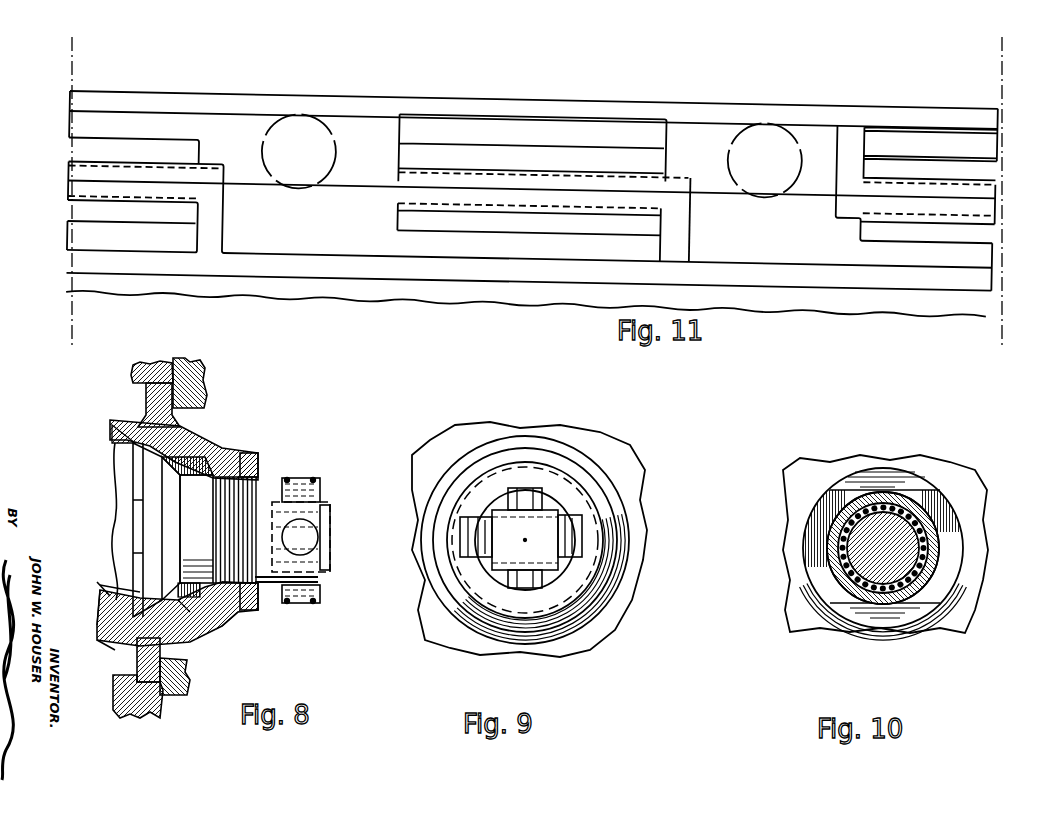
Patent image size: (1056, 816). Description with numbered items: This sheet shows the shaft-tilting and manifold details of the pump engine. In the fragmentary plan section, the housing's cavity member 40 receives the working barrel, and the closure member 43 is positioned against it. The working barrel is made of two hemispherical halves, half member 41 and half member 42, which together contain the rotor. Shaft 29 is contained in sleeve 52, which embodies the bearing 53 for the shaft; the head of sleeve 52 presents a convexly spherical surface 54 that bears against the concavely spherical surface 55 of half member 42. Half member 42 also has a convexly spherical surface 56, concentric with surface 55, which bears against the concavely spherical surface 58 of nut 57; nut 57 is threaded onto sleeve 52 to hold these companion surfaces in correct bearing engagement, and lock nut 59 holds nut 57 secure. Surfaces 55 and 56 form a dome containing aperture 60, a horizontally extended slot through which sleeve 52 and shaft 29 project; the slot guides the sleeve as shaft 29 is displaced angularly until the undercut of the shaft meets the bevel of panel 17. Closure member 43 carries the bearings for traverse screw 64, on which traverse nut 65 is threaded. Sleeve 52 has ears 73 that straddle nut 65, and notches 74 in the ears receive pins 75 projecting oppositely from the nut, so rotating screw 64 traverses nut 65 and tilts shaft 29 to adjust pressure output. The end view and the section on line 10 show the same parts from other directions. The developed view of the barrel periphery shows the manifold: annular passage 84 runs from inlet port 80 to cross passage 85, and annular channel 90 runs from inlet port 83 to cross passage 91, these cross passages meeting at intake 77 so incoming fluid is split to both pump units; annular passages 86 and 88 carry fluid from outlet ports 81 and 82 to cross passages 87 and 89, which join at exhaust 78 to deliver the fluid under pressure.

In FIG. 8, the section line 10— 10 is at (160, 423).
In FIG. 8, the panel 17 is at (122, 472).
In FIG. 10, the shaft 29 is at (903, 547).
In FIG. 8, the cavity member 40 is at (142, 703).
In FIG. 10, the cavity member 40 is at (927, 505).
In FIG. 11, the half member 41 is at (583, 62).
In FIG. 11, the half member 42 is at (401, 284).
In FIG. 8, the half member 42 is at (150, 407).
In FIG. 9, the half member 42 is at (633, 500).
In FIG. 8, the closure member 43 is at (183, 692).
In FIG. 8, the sleeve 52 is at (232, 618).
In FIG. 10, the sleeve 52 is at (867, 593).
In FIG. 10, the bearing 53 is at (900, 593).
In FIG. 8, the convexly spherical surface 54 is at (197, 626).
In FIG. 8, the concavely spherical surface 55 is at (113, 602).
In FIG. 8, the convexly spherical surface 56 is at (180, 635).
In FIG. 10, the convexly spherical surface 56 is at (833, 480).
In FIG. 8, the nut 57 is at (218, 448).
In FIG. 9, the nut 57 is at (612, 527).
In FIG. 8, the concavely spherical surface 58 is at (187, 528).
In FIG. 8, the lock nut 59 is at (250, 466).
In FIG. 9, the lock nut 59 is at (578, 580).
In FIG. 8, the aperture 60 is at (192, 620).
In FIG. 9, the aperture 60 is at (452, 590).
In FIG. 8, the traverse screw 64 is at (320, 597).
In FIG. 9, the traverse screw 64 is at (521, 518).
In FIG. 8, the traverse nut 65 is at (322, 556).
In FIG. 9, the traverse nut 65 is at (517, 525).
In FIG. 8, the ears 73 is at (320, 487).
In FIG. 9, the ears 73 is at (504, 577).
In FIG. 8, the notches 74 is at (322, 525).
In FIG. 8, the pins 75 is at (318, 537).
In FIG. 9, the pins 75 is at (532, 577).
In FIG. 11, the intake 77 is at (798, 116).
In FIG. 11, the exhaust 78 is at (268, 119).
In FIG. 11, the inlet port 80 is at (511, 154).
In FIG. 11, the outlet port 81 is at (100, 141).
In FIG. 11, the outlet port 82 is at (552, 213).
In FIG. 11, the inlet port 83 is at (149, 214).
In FIG. 11, the annular passage 84 is at (603, 127).
In FIG. 11, the cross passage 85 is at (713, 125).
In FIG. 11, the annular passage 86 is at (138, 122).
In FIG. 11, the cross passage 87 is at (354, 122).
In FIG. 11, the annular passage 88 is at (515, 244).
In FIG. 11, the cross passage 89 is at (318, 237).
In FIG. 11, the annular channel 90 is at (112, 241).
In FIG. 11, the cross passage 91 is at (791, 236).